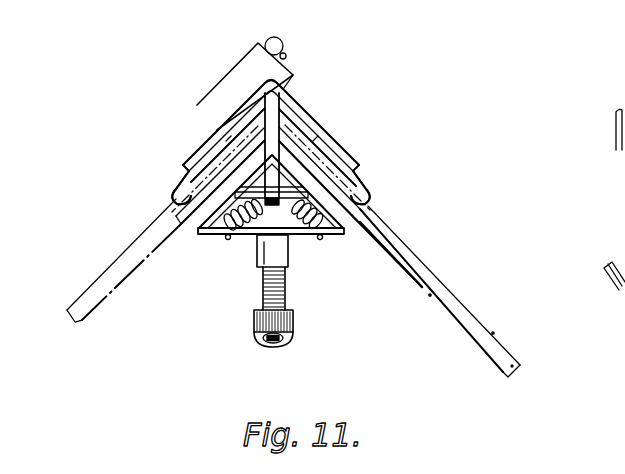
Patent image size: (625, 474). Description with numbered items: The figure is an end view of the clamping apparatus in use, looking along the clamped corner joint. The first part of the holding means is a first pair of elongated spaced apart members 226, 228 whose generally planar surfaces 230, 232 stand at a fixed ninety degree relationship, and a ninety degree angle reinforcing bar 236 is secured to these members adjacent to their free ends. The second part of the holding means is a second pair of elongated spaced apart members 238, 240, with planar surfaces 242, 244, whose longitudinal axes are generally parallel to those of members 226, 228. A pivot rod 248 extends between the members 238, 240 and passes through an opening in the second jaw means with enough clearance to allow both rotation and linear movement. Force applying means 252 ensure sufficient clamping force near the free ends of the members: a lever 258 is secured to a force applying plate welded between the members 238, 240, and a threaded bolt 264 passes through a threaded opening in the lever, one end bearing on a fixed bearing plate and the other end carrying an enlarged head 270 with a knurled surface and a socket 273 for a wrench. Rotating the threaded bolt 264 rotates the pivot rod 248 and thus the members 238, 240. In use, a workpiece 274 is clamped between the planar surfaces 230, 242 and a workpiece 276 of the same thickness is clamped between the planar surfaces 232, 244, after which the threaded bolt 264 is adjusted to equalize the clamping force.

The elongated spaced apart member 226 is at (364, 186).
The elongated spaced apart member 228 is at (178, 186).
The planar surface 230 is at (370, 204).
The planar surface 232 is at (178, 193).
The angle reinforcing bar 236 is at (300, 111).
The elongated spaced apart member 238 is at (361, 223).
The elongated spaced apart member 240 is at (200, 236).
The planar surface 242 is at (368, 221).
The planar surface 244 is at (178, 222).
The pivot rod 248 is at (290, 187).
The force applying means 252 is at (213, 311).
The lever 258 is at (279, 253).
The threaded bolt 264 is at (267, 288).
The enlarged head 270 is at (284, 348).
The socket 273 is at (262, 348).
The workpiece 274 is at (468, 319).
The workpiece 276 is at (116, 270).